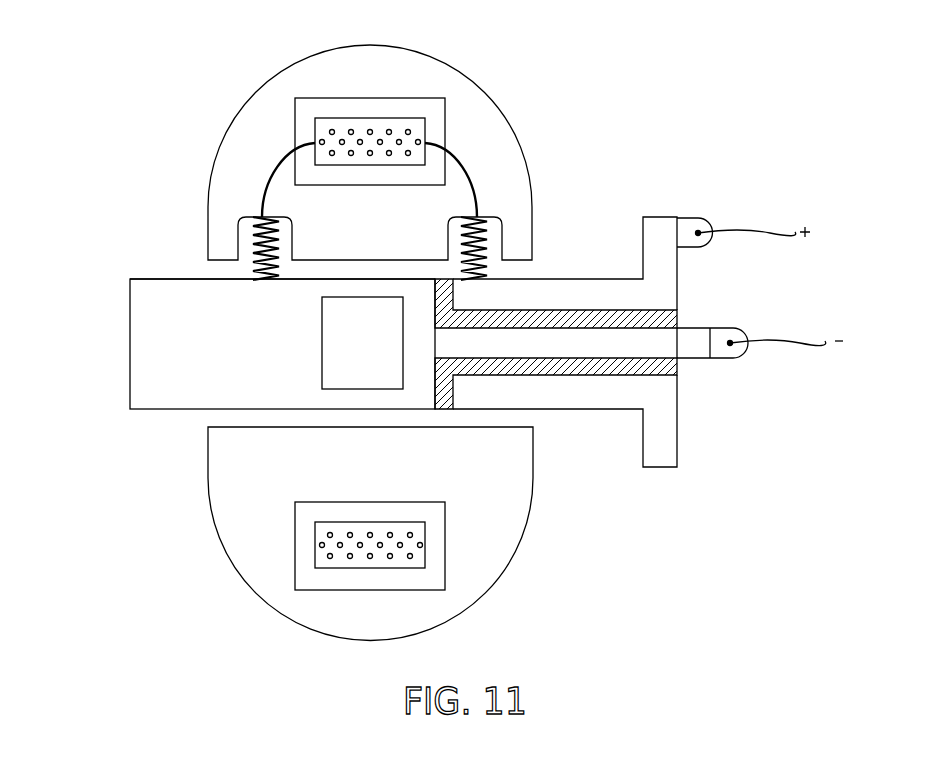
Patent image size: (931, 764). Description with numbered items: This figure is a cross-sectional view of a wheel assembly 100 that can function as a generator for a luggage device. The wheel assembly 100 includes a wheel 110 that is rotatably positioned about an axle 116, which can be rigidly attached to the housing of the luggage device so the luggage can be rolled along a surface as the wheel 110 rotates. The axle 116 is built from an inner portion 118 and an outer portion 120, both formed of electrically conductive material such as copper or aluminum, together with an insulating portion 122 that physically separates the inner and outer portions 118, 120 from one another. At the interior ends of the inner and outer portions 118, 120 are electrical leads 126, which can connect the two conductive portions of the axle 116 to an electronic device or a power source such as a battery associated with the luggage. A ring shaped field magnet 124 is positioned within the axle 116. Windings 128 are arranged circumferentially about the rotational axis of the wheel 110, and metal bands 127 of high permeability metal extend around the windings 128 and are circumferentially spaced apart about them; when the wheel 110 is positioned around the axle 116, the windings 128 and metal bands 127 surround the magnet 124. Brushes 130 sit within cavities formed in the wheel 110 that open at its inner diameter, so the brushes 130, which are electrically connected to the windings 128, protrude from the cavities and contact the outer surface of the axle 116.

The wheel assembly 100 is at (172, 56).
The wheel 110 is at (468, 83).
The axle 116 is at (152, 278).
The inner portion 118 is at (665, 298).
The outer portion 120 is at (142, 352).
The insulating portion 122 is at (615, 317).
The field magnet 124 is at (335, 352).
The electrical leads 126 is at (748, 237).
The metal bands 127 is at (377, 103).
The windings 128 is at (362, 153).
The brushes 130 is at (262, 215).